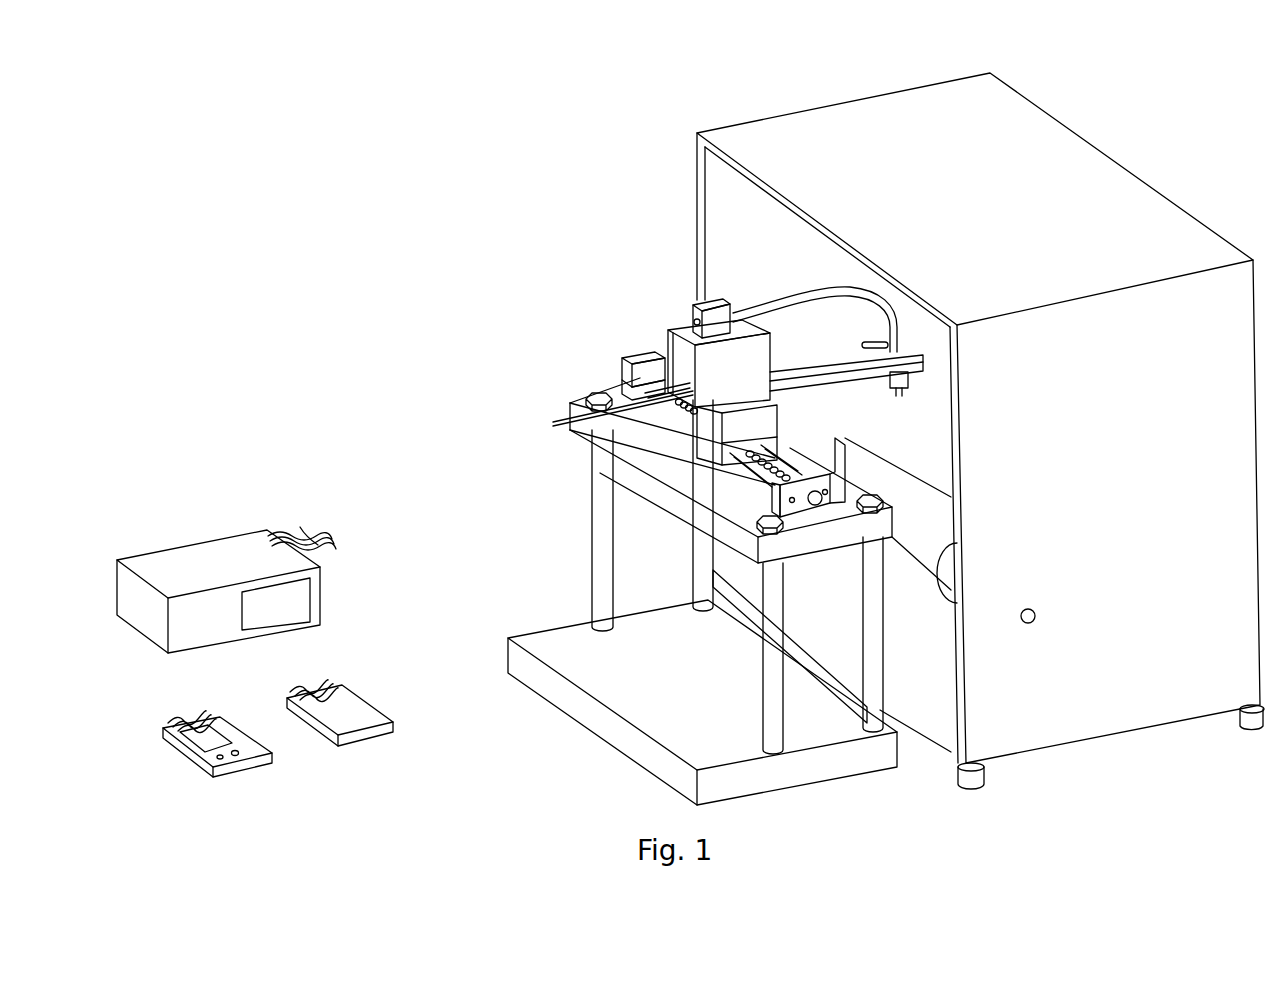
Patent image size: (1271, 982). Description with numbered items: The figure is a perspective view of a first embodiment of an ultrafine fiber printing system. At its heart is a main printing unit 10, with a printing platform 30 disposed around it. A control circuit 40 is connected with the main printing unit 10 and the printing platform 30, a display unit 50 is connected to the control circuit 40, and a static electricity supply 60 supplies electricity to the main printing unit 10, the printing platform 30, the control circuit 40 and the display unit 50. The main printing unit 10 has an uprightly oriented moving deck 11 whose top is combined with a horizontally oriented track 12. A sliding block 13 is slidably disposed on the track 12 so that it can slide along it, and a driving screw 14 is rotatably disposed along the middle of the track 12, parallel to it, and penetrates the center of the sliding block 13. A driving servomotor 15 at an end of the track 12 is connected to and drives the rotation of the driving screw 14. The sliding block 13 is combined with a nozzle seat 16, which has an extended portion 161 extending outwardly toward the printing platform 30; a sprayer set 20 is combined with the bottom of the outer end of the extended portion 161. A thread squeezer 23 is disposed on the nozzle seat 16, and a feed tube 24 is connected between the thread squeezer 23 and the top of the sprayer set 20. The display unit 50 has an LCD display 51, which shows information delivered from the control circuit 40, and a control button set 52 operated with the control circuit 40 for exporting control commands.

The main printing unit 10 is at (553, 270).
The moving deck 11 is at (847, 763).
The track 12 is at (838, 503).
The sliding block 13 is at (713, 457).
The driving screw 14 is at (760, 473).
The driving servomotor 15 is at (636, 355).
The nozzle seat 16 is at (707, 420).
The extended portion 161 is at (850, 330).
The sprayer set 20 is at (915, 402).
The thread squeezer 23 is at (698, 305).
The feed tube 24 is at (760, 310).
The printing platform 30 is at (1152, 755).
The control circuit 40 is at (375, 732).
The display unit 50 is at (258, 765).
The LCD display 51 is at (195, 736).
The control button set 52 is at (222, 762).
The static electricity supply 60 is at (147, 562).